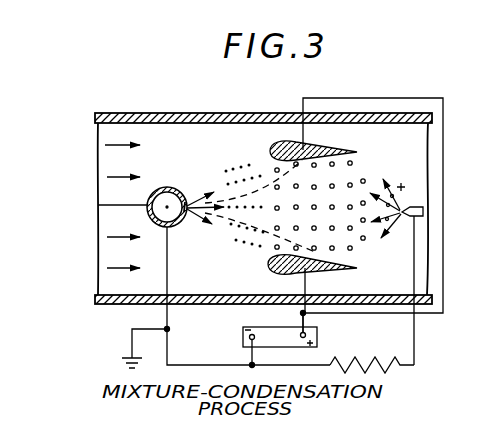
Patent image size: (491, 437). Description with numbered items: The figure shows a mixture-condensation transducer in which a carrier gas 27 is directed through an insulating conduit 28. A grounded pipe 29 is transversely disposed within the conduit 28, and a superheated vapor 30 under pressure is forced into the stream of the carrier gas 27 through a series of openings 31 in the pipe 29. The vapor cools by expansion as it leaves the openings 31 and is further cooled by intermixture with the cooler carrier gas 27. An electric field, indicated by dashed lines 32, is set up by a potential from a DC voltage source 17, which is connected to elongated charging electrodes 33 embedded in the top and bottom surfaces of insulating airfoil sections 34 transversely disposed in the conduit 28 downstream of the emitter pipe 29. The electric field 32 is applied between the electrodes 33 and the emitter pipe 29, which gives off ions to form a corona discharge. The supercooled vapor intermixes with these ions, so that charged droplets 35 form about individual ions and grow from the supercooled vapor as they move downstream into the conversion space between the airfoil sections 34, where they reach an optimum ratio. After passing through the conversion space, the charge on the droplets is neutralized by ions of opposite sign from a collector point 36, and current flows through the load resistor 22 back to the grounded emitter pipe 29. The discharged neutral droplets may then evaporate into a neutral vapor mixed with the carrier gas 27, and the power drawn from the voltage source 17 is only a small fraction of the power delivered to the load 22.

The DC voltage source 17 is at (272, 333).
The load resistor 22 is at (386, 370).
The carrier gas 27 is at (113, 267).
The insulating conduit 28 is at (120, 303).
The grounded pipe 29 is at (98, 204).
The superheated vapor 30 is at (162, 191).
The openings 31 is at (184, 201).
The electric field 32 is at (284, 186).
The elongated charging electrodes 33 is at (303, 118).
The insulating airfoil sections 34 is at (342, 150).
The charged droplets 35 is at (226, 232).
The collector point 36 is at (413, 207).